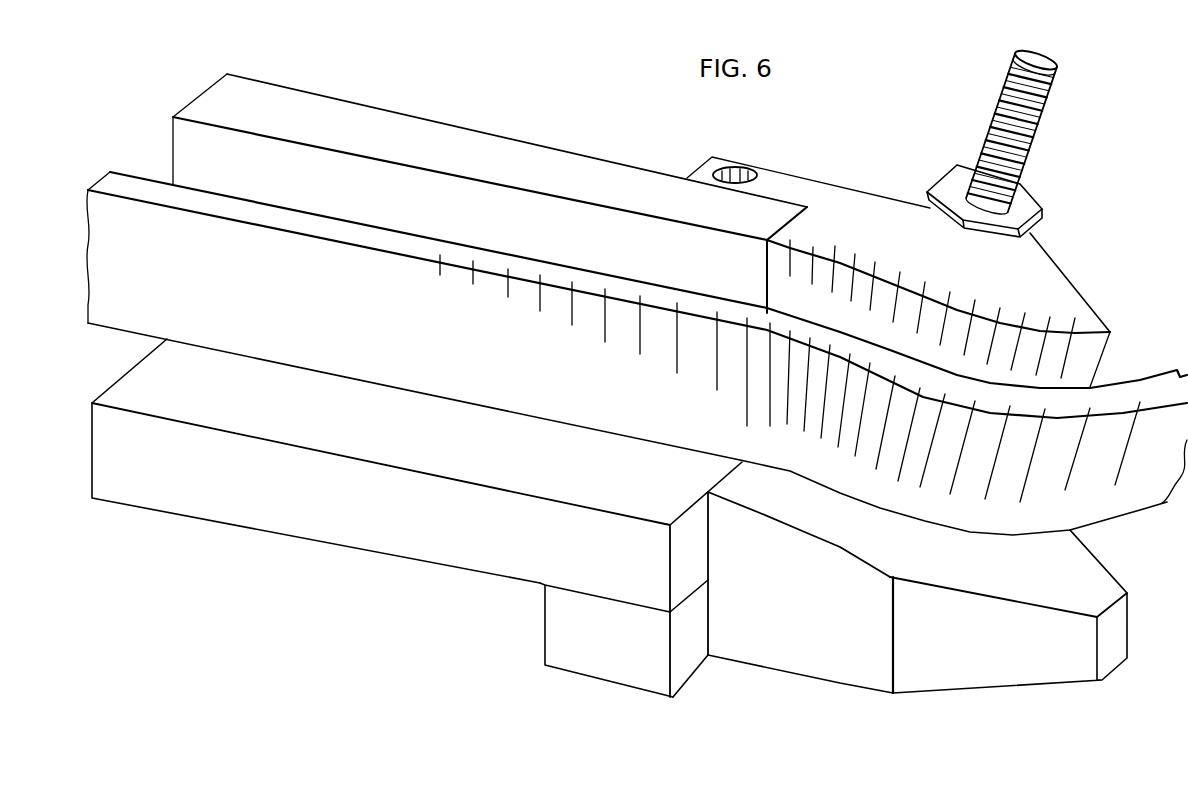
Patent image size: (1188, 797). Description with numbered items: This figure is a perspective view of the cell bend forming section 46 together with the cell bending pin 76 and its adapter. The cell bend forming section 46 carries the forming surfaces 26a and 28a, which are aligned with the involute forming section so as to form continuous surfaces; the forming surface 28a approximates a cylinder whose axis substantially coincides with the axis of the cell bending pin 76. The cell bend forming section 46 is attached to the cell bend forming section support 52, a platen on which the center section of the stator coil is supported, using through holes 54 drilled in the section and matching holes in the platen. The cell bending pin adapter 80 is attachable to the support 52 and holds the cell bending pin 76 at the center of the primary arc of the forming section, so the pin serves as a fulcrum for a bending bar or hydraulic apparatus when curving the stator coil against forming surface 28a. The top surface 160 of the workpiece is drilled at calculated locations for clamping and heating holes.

The forming surface 26a is at (1097, 578).
The forming surface 28a is at (1085, 357).
The cell bend forming section 46 is at (1068, 270).
The cell bend forming section support 52 is at (517, 150).
The through holes 54 is at (738, 167).
The cell bending pin 76 is at (1003, 93).
The cell bending pin adapter 80 is at (580, 638).
The top surface 160 is at (852, 200).